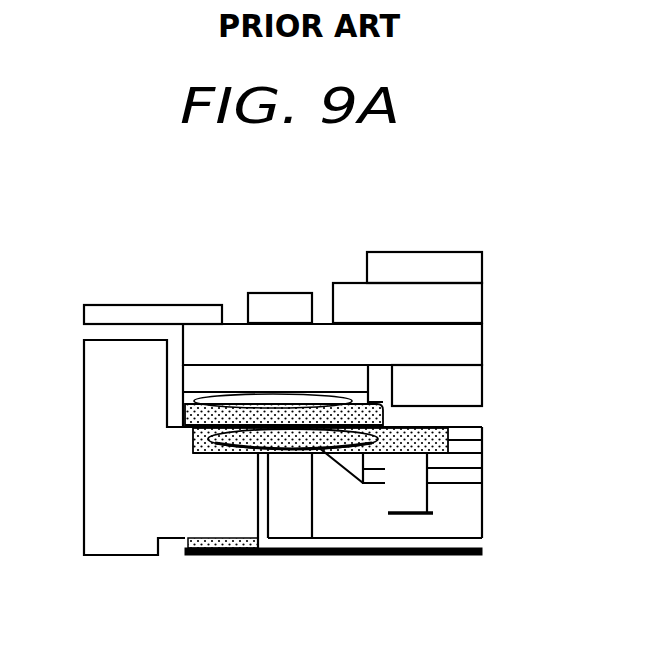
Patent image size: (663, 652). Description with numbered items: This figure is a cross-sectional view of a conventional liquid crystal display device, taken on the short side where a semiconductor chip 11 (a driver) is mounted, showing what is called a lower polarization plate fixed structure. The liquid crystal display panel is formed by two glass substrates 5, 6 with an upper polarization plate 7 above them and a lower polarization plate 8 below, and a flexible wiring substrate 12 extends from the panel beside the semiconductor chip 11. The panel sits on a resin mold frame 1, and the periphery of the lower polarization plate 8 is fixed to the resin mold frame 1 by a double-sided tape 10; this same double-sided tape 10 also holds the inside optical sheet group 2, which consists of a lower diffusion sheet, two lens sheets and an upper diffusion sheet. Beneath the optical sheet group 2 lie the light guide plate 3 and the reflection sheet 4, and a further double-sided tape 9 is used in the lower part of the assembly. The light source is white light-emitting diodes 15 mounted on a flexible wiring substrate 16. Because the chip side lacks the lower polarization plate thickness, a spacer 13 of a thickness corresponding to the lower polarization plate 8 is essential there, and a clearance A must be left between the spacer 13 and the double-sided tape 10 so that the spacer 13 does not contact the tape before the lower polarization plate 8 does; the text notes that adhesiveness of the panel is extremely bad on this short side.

The resin mold frame 1 is at (95, 460).
The optical sheet group 2 is at (490, 425).
The light guide plate 3 is at (455, 508).
The reflection sheet 4 is at (337, 556).
The glass substrate 5 is at (471, 305).
The glass substrate 6 is at (471, 347).
The upper polarization plate 7 is at (471, 266).
The lower polarization plate 8 is at (475, 382).
The double-sided tape 9 is at (208, 549).
The double-sided tape 10 is at (185, 412).
The semiconductor chip 11 is at (268, 298).
The flexible wiring substrate 12 is at (124, 312).
The spacer 13 is at (288, 380).
The white light-emitting diodes 15 is at (298, 558).
The flexible wiring substrate 16 is at (334, 452).
The clearance A is at (236, 390).